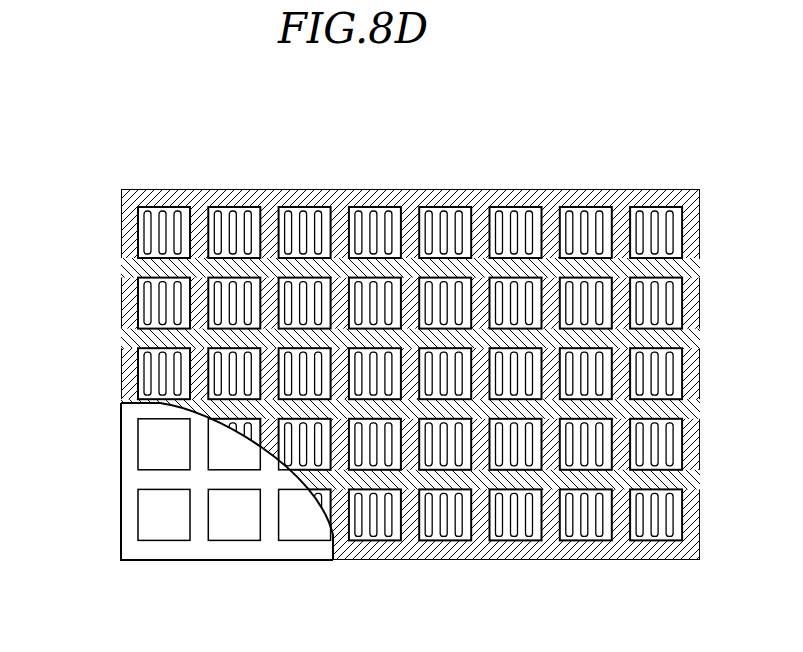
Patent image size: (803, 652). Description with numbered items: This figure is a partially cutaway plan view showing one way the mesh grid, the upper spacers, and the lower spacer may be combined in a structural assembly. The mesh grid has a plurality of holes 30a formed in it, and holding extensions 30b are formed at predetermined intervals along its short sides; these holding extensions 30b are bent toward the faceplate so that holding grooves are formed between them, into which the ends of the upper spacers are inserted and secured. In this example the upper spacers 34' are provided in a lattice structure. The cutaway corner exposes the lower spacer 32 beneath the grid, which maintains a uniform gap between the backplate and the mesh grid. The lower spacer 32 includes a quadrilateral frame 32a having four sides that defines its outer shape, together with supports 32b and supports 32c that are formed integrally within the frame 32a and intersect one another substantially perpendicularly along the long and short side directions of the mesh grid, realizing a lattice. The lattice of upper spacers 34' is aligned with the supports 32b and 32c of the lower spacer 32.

The holes 30a is at (153, 293).
The holding extensions 30b is at (155, 193).
The upper spacers 34' is at (410, 320).
The lower spacer 32 is at (113, 532).
The frame 32a is at (143, 553).
The supports 32b is at (148, 480).
The supports 32c is at (202, 528).